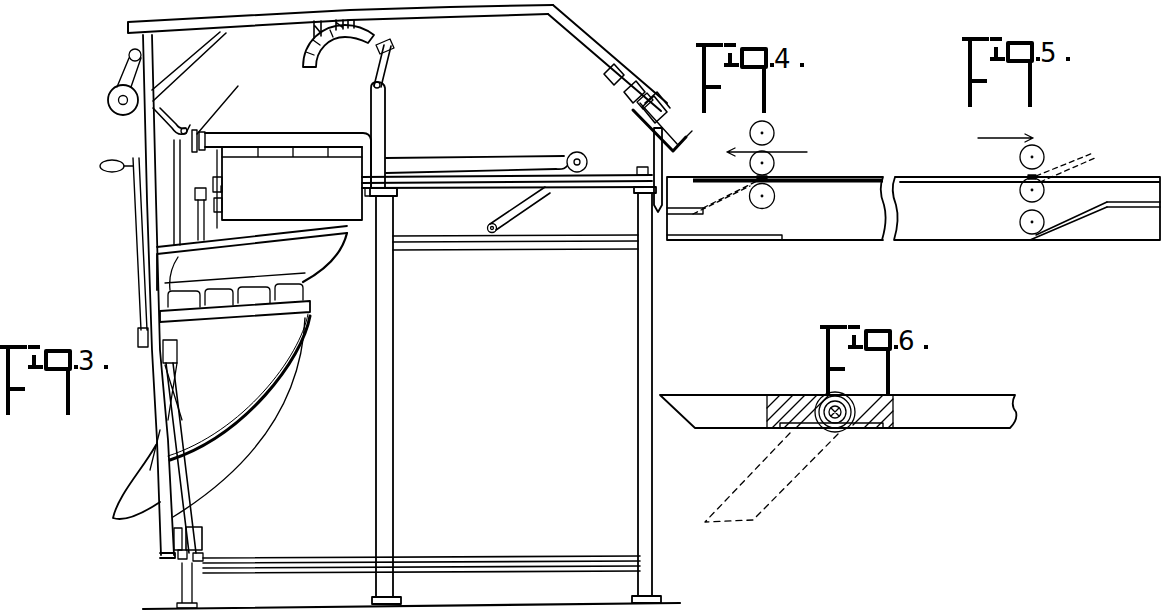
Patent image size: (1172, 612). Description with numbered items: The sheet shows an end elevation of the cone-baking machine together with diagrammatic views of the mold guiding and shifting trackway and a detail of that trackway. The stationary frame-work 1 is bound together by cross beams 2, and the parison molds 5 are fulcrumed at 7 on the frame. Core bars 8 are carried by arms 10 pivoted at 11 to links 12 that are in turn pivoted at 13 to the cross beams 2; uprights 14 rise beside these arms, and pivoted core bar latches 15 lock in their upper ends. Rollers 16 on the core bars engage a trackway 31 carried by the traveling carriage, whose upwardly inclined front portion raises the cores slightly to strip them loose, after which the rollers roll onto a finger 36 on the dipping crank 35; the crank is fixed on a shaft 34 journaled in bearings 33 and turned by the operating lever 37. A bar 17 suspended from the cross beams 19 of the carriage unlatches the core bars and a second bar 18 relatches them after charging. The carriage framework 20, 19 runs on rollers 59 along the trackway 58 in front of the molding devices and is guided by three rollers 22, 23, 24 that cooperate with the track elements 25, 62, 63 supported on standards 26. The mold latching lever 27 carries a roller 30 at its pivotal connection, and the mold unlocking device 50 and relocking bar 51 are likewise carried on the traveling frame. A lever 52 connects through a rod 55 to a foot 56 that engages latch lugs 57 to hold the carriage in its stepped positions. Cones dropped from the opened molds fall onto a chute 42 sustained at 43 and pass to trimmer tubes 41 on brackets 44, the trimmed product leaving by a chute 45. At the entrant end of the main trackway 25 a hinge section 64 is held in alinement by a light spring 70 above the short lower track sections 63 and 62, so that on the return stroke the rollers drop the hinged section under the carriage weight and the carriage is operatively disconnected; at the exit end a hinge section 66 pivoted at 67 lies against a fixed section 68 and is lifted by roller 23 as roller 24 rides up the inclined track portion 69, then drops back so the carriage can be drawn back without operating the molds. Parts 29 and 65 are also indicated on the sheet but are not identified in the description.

In FIG. 3, the stationary frame-work 1 is at (385, 356).
In FIG. 3, the cross beams 2 is at (565, 243).
In FIG. 3, the parison molds 5 is at (292, 183).
In FIG. 3, the fulcrum 7 is at (636, 169).
In FIG. 3, the core bars 8 is at (300, 137).
In FIG. 3, the arms 10 is at (463, 156).
In FIG. 3, the pivot 11 is at (582, 158).
In FIG. 3, the links 12 is at (530, 202).
In FIG. 3, the pivot 13 is at (491, 236).
In FIG. 3, the uprights 14 is at (386, 128).
In FIG. 3, the core bar latches 15 is at (390, 68).
In FIG. 3, the rollers 16 is at (225, 105).
In FIG. 3, the unlatching bar 17 is at (367, 34).
In FIG. 3, the relatching bar 18 is at (314, 65).
In FIG. 3, the cross beams of the carriage 19 is at (500, 8).
In FIG. 3, the carriage framework 20 is at (158, 387).
In FIG. 3, the guide roller 22 is at (604, 77).
In FIG. 4, the guide roller 22 is at (766, 130).
In FIG. 5, the guide roller 22 is at (1040, 152).
In FIG. 3, the guide roller 23 is at (625, 96).
In FIG. 4, the guide roller 23 is at (766, 166).
In FIG. 5, the guide roller 23 is at (1020, 191).
In FIG. 3, the guide roller 24 is at (653, 103).
In FIG. 4, the guide roller 24 is at (775, 196).
In FIG. 5, the guide roller 24 is at (1020, 221).
In FIG. 3, the main trackway 25 is at (640, 109).
In FIG. 4, the main trackway 25 is at (836, 176).
In FIG. 6, the main trackway 25 is at (838, 411).
In FIG. 3, the standards 26 is at (654, 151).
In FIG. 3, the latching lever 27 is at (222, 187).
In FIG. 3, the block 29 is at (223, 192).
In FIG. 3, the roller 30 is at (214, 150).
In FIG. 3, the trackway 31 is at (182, 128).
In FIG. 3, the bearings 33 is at (108, 92).
In FIG. 3, the shaft 34 is at (112, 102).
In FIG. 3, the dipping crank 35 is at (165, 133).
In FIG. 3, the finger 36 is at (200, 130).
In FIG. 3, the operating lever 37 is at (128, 55).
In FIG. 3, the trimmer tubes 41 is at (303, 294).
In FIG. 3, the chute 42 is at (252, 258).
In FIG. 3, the chute support 43 is at (330, 250).
In FIG. 3, the brackets 44 is at (312, 308).
In FIG. 3, the chute 45 is at (211, 416).
In FIG. 3, the mold unlocking device 50 is at (222, 212).
In FIG. 3, the mold relocking bar 51 is at (200, 187).
In FIG. 3, the lever 52 is at (132, 228).
In FIG. 3, the rod 55 is at (187, 466).
In FIG. 3, the foot 56 is at (203, 535).
In FIG. 3, the latch lugs 57 is at (204, 554).
In FIG. 3, the trackway 58 is at (183, 560).
In FIG. 3, the rollers 59 is at (174, 548).
In FIG. 3, the track section 62 is at (666, 124).
In FIG. 4, the track section 62 is at (712, 208).
In FIG. 3, the track section 63 is at (680, 142).
In FIG. 4, the track section 63 is at (708, 244).
In FIG. 4, the hinge section 64 is at (715, 178).
In FIG. 6, the hinge section 64 is at (740, 412).
In FIG. 4, the bushing 65 is at (770, 177).
In FIG. 6, the bushing 65 is at (838, 400).
In FIG. 5, the hinge section 66 is at (1072, 176).
In FIG. 5, the pivot 67 is at (1028, 175).
In FIG. 5, the fixed section 68 is at (1130, 176).
In FIG. 5, the inclined track portion 69 is at (1098, 213).
In FIG. 6, the spring 70 is at (860, 430).